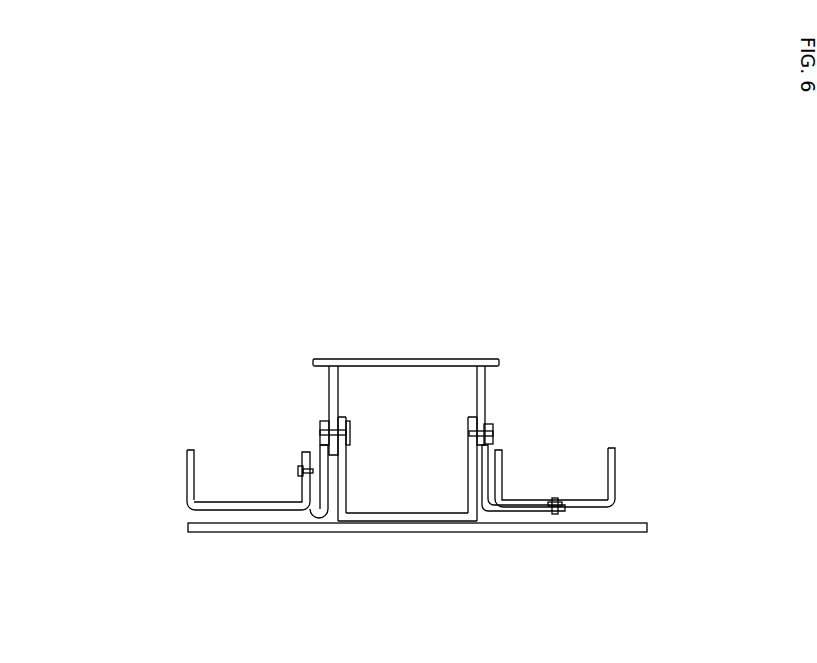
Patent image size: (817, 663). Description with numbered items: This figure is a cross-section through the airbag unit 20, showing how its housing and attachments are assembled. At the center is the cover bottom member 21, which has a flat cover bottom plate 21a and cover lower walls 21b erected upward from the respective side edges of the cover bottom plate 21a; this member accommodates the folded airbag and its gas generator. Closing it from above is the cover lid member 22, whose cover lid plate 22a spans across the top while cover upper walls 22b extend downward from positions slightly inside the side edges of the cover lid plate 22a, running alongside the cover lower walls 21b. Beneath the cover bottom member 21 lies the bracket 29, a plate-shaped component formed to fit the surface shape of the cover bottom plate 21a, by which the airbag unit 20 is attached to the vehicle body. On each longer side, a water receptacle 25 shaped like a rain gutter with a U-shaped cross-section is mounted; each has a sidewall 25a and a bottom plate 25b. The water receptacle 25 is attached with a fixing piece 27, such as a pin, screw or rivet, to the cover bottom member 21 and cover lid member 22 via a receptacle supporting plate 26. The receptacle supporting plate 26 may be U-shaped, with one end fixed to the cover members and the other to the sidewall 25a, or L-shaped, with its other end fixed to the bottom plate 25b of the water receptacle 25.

The airbag unit 20 is at (410, 308).
The cover bottom member 21 is at (350, 471).
The cover bottom plate 21a is at (417, 522).
The cover lower wall 21b is at (475, 497).
The cover lid member 22 is at (487, 385).
The cover lid plate 22a is at (432, 363).
The cover upper wall 22b is at (332, 375).
The water receptacle 25 is at (185, 449).
The sidewall 25a is at (187, 472).
The bottom plate 25b is at (228, 510).
The receptacle supporting plate 26 is at (316, 515).
The fixing piece 27 is at (318, 431).
The bracket 29 is at (267, 527).